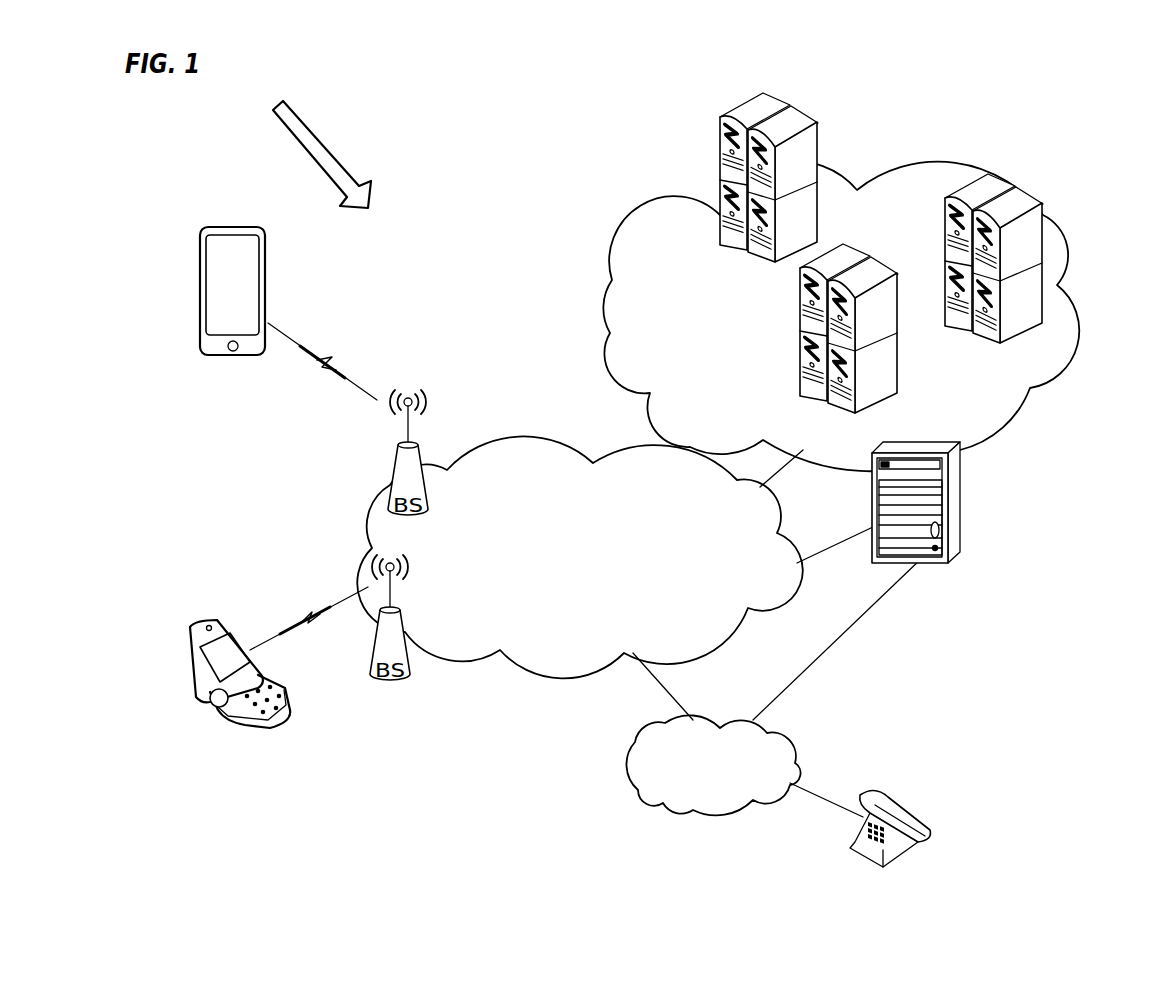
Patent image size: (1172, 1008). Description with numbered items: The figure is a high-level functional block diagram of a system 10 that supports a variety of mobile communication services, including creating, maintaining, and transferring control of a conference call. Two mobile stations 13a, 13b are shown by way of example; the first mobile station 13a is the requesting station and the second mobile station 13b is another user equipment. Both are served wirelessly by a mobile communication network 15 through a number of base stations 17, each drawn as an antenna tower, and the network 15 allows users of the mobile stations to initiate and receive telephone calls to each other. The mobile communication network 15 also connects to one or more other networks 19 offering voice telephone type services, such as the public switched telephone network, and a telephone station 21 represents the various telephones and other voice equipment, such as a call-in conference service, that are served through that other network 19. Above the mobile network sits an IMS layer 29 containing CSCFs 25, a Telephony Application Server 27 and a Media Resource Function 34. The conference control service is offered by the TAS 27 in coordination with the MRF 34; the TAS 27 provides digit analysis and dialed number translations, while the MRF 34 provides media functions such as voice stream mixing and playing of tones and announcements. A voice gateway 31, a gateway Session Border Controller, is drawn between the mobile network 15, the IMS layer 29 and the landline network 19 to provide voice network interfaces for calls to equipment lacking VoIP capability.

The system 10 is at (312, 147).
The mobile station 13a is at (187, 650).
The mobile station 13b is at (200, 272).
The mobile communication network 15 is at (477, 442).
The base station 17 is at (395, 470).
The other network 19 is at (795, 753).
The telephone station 21 is at (850, 850).
The CSCFs 25 is at (800, 333).
The Telephony Application Server 27 is at (817, 135).
The IMS layer 29 is at (1077, 337).
The voice gateway 31 is at (960, 503).
The Media Resource Function 34 is at (1042, 217).